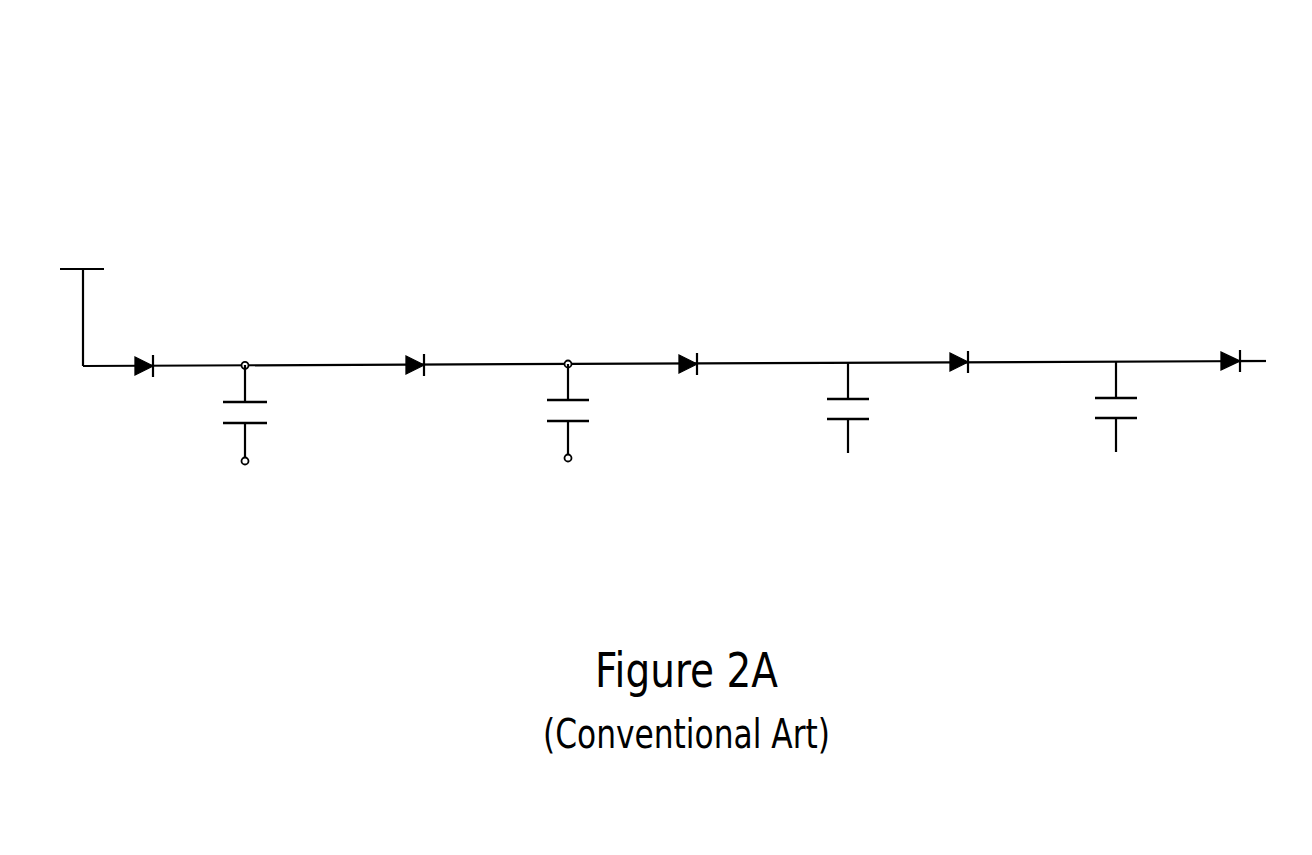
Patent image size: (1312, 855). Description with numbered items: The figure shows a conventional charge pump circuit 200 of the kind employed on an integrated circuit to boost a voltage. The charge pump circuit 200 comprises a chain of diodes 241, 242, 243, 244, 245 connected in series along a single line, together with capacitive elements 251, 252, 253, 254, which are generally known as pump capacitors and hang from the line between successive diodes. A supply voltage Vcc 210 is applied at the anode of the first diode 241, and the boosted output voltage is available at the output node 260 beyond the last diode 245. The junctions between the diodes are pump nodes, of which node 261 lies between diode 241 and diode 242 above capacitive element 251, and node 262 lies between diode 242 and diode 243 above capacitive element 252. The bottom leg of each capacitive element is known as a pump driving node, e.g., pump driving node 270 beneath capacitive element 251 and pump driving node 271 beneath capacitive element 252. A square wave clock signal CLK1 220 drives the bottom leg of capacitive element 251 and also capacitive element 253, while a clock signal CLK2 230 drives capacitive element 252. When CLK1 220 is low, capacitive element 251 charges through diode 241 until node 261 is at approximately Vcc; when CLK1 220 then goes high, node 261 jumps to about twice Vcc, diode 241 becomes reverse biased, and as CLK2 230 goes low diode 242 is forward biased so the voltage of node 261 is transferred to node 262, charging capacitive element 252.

The charge pump circuit 200 is at (197, 156).
The supply voltage Vcc 210 is at (112, 248).
The clock signal CLK1 220 is at (325, 462).
The clock signal CLK2 230 is at (651, 459).
The diode 241 is at (150, 355).
The diode 242 is at (421, 354).
The diode 243 is at (692, 353).
The diode 244 is at (963, 351).
The diode 245 is at (1235, 350).
The capacitive element 251 is at (231, 419).
The capacitive element 252 is at (548, 416).
The capacitive element 253 is at (831, 416).
The capacitive element 254 is at (1099, 416).
The output node 260 is at (1268, 370).
The node 261 is at (248, 360).
The node 262 is at (571, 359).
The pump driving node 270 is at (240, 470).
The pump driving node 271 is at (563, 468).